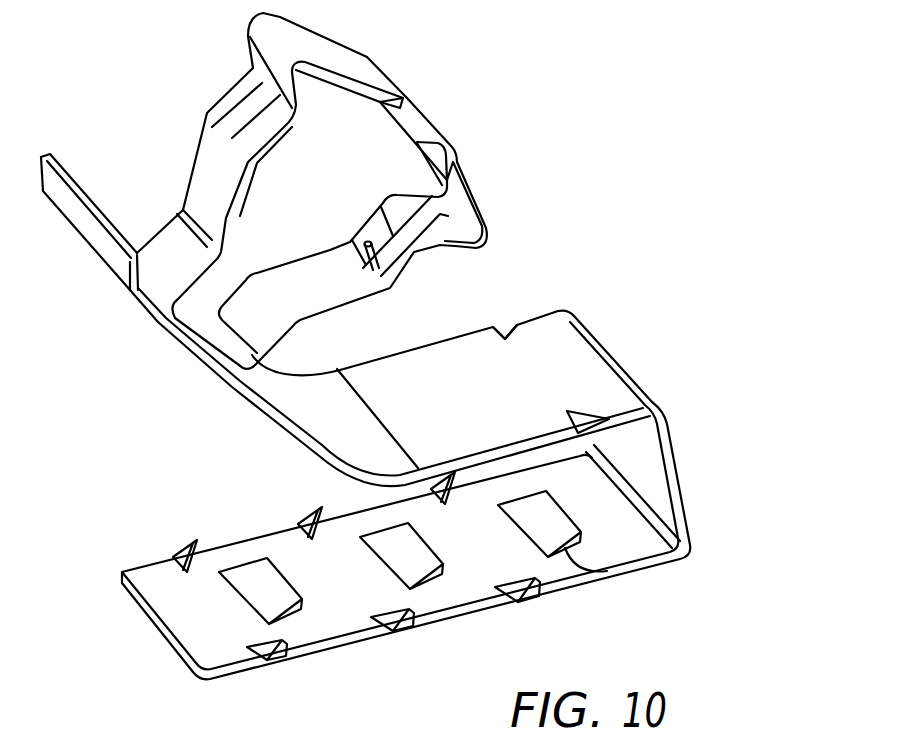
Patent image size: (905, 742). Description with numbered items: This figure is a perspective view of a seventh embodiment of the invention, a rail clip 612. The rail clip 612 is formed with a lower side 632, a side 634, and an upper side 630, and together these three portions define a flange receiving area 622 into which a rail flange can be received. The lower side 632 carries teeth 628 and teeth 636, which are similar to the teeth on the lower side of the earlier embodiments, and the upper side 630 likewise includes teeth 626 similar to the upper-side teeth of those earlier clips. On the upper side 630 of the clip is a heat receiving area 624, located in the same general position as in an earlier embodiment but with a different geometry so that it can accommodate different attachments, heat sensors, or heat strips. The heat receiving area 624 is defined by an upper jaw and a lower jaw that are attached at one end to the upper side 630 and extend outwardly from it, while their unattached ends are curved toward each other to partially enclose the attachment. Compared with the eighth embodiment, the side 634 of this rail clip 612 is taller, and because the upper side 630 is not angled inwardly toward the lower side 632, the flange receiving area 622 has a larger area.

The rail clip 612 is at (651, 304).
The flange receiving area 622 is at (258, 502).
The heat receiving area 624 is at (340, 197).
The teeth 626 is at (507, 326).
The teeth 628 is at (523, 598).
The upper side 630 is at (480, 408).
The lower side 632 is at (505, 558).
The side 634 is at (672, 455).
The teeth 636 is at (607, 571).